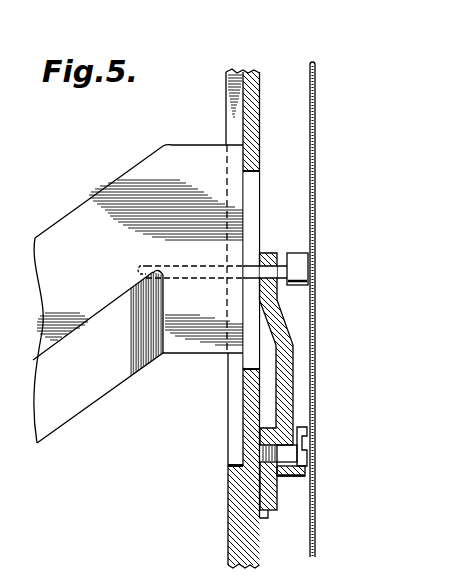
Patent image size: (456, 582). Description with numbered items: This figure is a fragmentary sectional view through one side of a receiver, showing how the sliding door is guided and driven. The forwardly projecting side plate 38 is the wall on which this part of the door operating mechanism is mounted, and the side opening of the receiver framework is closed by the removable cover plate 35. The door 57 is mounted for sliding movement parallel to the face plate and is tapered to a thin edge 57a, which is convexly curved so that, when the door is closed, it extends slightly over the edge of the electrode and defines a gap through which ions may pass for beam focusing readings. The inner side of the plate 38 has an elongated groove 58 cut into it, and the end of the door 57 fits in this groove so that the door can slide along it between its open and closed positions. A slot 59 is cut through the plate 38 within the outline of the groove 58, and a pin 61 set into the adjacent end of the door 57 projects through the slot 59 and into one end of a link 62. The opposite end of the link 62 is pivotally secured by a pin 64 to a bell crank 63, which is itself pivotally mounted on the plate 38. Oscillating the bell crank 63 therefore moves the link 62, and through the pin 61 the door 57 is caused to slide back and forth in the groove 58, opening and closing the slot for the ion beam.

The groove 58 is at (233, 113).
The slot 59 is at (252, 189).
The pin 61 is at (302, 263).
The cover plate 35 is at (316, 312).
The link 62 is at (293, 382).
The pin 64 is at (303, 442).
The bell crank 63 is at (285, 508).
The side plate 38 is at (228, 510).
The door 57 is at (83, 395).
The thin edge 57a is at (132, 375).